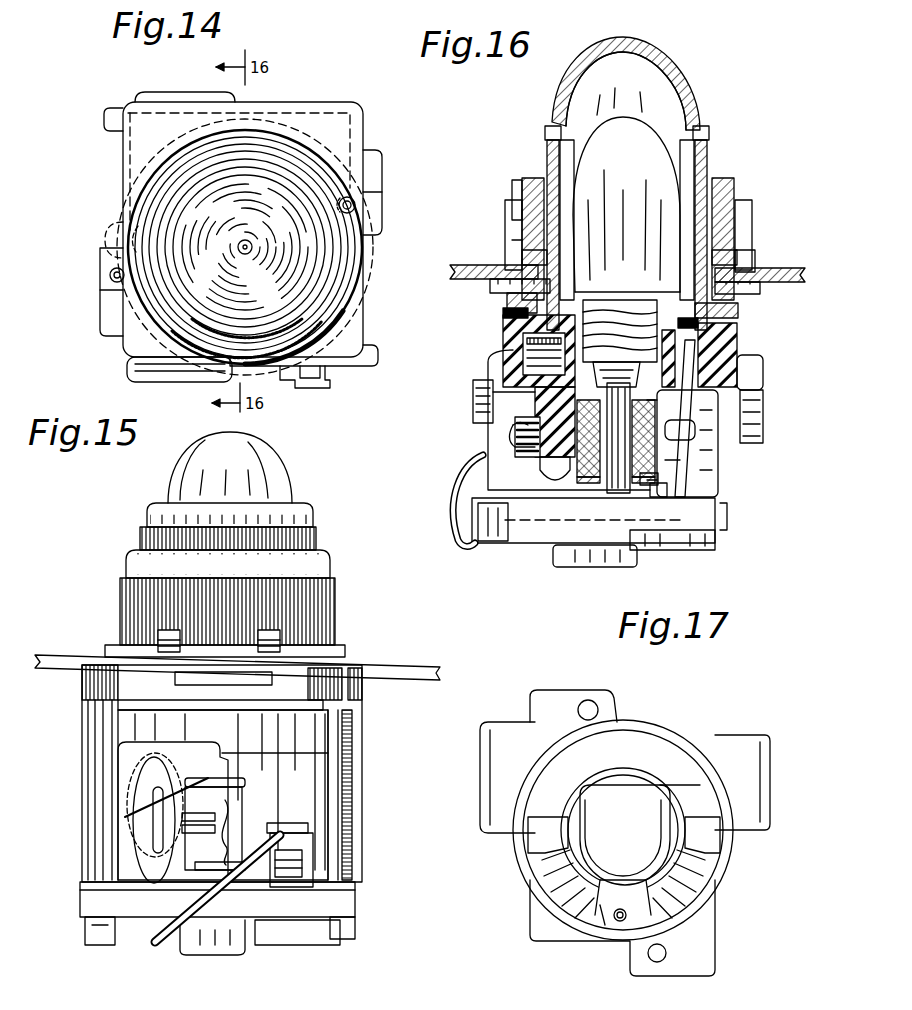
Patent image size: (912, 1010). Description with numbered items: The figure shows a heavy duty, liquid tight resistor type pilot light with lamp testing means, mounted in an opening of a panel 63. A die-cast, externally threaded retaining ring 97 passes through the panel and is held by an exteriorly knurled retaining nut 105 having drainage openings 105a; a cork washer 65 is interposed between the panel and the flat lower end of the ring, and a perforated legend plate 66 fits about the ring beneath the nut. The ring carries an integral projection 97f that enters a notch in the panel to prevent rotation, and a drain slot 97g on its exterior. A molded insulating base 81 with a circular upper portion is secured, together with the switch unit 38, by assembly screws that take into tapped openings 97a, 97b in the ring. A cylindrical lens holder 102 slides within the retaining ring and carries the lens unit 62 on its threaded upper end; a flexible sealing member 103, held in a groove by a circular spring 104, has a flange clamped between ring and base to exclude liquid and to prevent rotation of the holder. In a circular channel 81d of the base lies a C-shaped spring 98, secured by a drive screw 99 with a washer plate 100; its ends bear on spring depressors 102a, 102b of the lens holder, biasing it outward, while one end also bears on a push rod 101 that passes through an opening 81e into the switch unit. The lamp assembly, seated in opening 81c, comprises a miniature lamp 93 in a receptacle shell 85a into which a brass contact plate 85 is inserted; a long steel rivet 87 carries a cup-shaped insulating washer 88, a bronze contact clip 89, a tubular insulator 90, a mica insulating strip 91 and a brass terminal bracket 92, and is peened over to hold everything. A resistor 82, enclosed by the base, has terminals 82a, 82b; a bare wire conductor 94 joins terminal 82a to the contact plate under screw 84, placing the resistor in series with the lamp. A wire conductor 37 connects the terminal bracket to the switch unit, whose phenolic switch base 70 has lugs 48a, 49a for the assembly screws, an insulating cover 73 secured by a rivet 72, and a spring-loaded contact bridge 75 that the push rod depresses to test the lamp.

In FIG. 15, the wire conductor 37 is at (158, 945).
In FIG. 16, the wire conductor 37 is at (450, 505).
In FIG. 15, the switch unit 38 is at (240, 955).
In FIG. 16, the switch unit 38 is at (520, 525).
In FIG. 15, the mounting lug 48a is at (352, 935).
In FIG. 15, the mounting lug 49a is at (88, 930).
In FIG. 14, the lens unit 62 is at (200, 198).
In FIG. 15, the lens unit 62 is at (272, 470).
In FIG. 16, the lens unit 62 is at (668, 60).
In FIG. 15, the panel 63 is at (65, 657).
In FIG. 16, the panel 63 is at (470, 265).
In FIG. 14, the washer 65 is at (328, 330).
In FIG. 15, the washer 65 is at (262, 680).
In FIG. 16, the washer 65 is at (492, 284).
In FIG. 14, the legend plate 66 is at (365, 108).
In FIG. 15, the legend plate 66 is at (108, 652).
In FIG. 16, the legend plate 66 is at (522, 260).
In FIG. 15, the switch base 70 is at (300, 925).
In FIG. 16, the rivet 72 is at (695, 550).
In FIG. 15, the insulating cover 73 is at (80, 887).
In FIG. 16, the insulating cover 73 is at (725, 512).
In FIG. 16, the contact bridge 75 is at (510, 518).
In FIG. 15, the base 81 is at (306, 791).
In FIG. 16, the base 81 is at (737, 340).
In FIG. 17, the base 81 is at (640, 712).
In FIG. 16, the opening 81c is at (668, 282).
In FIG. 17, the opening 81c is at (645, 800).
In FIG. 16, the channel 81d is at (737, 352).
In FIG. 17, the channel 81d is at (700, 800).
In FIG. 16, the opening 81e is at (715, 395).
In FIG. 17, the opening 81e is at (710, 820).
In FIG. 15, the resistor 82 is at (146, 832).
In FIG. 16, the resistor 82 is at (700, 468).
In FIG. 15, the resistor terminal 82a is at (135, 800).
In FIG. 16, the resistor terminal 82a is at (493, 413).
In FIG. 16, the resistor terminal 82b is at (695, 432).
In FIG. 16, the screw 84 is at (553, 480).
In FIG. 16, the contact plate 85 is at (513, 452).
In FIG. 16, the receptacle shell 85a is at (527, 358).
In FIG. 16, the rivet 87 is at (618, 493).
In FIG. 16, the insulating washer 88 is at (577, 395).
In FIG. 16, the contact clip 89 is at (593, 380).
In FIG. 16, the tubular insulator 90 is at (650, 460).
In FIG. 16, the insulating strip 91 is at (685, 470).
In FIG. 14, the terminal bracket 92 is at (320, 386).
In FIG. 15, the terminal bracket 92 is at (300, 860).
In FIG. 16, the terminal bracket 92 is at (655, 497).
In FIG. 16, the lamp 93 is at (632, 159).
In FIG. 15, the wire conductor 94 is at (236, 826).
In FIG. 16, the wire conductor 94 is at (515, 432).
In FIG. 14, the retaining ring 97 is at (372, 160).
In FIG. 15, the retaining ring 97 is at (364, 700).
In FIG. 16, the retaining ring 97 is at (735, 210).
In FIG. 14, the tapped opening 97a is at (356, 205).
In FIG. 14, the tapped opening 97b is at (109, 276).
In FIG. 14, the projection 97f is at (130, 233).
In FIG. 16, the drain slot 97g is at (520, 228).
In FIG. 16, the C-shaped spring 98 is at (503, 345).
In FIG. 17, the C-shaped spring 98 is at (700, 875).
In FIG. 17, the drive screw 99 is at (622, 922).
In FIG. 17, the washer plate 100 is at (598, 920).
In FIG. 16, the push rod 101 is at (680, 452).
In FIG. 16, the lens holder 102 is at (708, 232).
In FIG. 16, the spring depressor 102a is at (503, 315).
In FIG. 16, the spring depressor 102b is at (698, 322).
In FIG. 15, the sealing member 103 is at (345, 735).
In FIG. 16, the sealing member 103 is at (507, 302).
In FIG. 16, the circular spring 104 is at (738, 308).
In FIG. 14, the retaining nut 105 is at (312, 306).
In FIG. 15, the retaining nut 105 is at (332, 580).
In FIG. 16, the retaining nut 105 is at (745, 185).
In FIG. 15, the drainage opening 105a is at (282, 646).
In FIG. 16, the drainage opening 105a is at (755, 258).